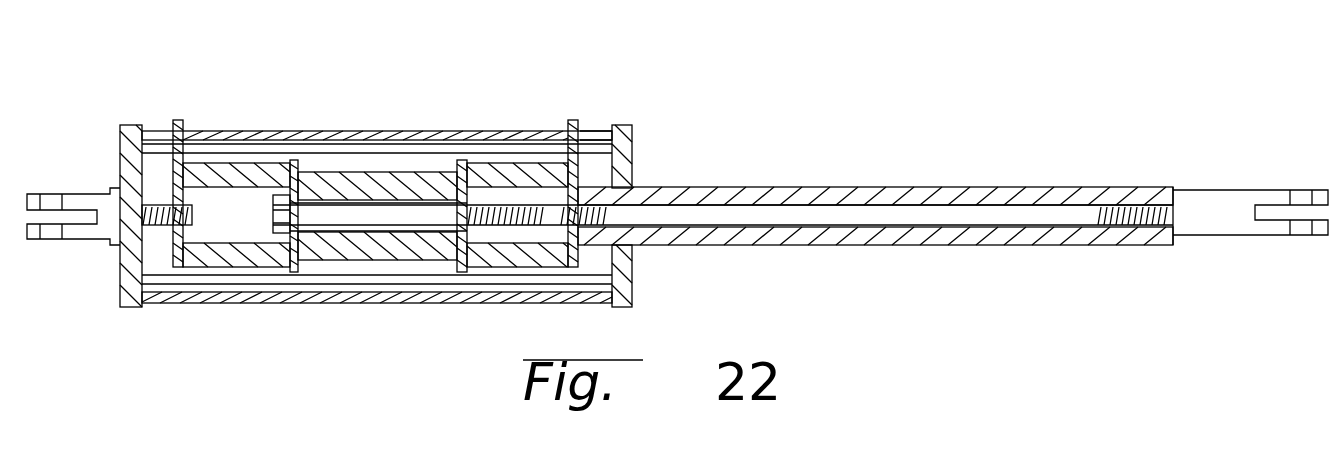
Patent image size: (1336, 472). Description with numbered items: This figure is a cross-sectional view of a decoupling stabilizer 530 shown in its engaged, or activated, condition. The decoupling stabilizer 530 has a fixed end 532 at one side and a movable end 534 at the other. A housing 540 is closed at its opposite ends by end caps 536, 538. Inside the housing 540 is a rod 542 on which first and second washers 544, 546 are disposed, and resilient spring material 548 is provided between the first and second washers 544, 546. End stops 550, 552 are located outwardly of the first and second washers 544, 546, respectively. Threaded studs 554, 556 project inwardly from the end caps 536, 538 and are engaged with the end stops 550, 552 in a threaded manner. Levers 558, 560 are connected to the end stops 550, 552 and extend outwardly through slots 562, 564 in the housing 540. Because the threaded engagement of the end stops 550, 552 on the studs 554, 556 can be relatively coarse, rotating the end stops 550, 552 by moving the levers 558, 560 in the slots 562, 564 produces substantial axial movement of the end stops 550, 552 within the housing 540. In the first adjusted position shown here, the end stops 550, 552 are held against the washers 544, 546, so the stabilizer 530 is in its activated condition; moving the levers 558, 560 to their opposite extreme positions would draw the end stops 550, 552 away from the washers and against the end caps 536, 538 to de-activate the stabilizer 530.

The decoupling stabilizer 530 is at (236, 328).
The fixed end 532 is at (52, 192).
The movable end 534 is at (1225, 200).
The end cap 536 is at (125, 293).
The end cap 538 is at (633, 288).
The housing 540 is at (290, 297).
The rod 542 is at (378, 208).
The first washer 544 is at (292, 158).
The second washer 546 is at (457, 158).
The resilient spring material 548 is at (381, 243).
The end stop 550 is at (205, 258).
The end stop 552 is at (518, 262).
The threaded stud 554 is at (158, 230).
The threaded stud 556 is at (632, 173).
The lever 558 is at (178, 120).
The lever 560 is at (573, 118).
The slot 562 is at (155, 133).
The slot 564 is at (596, 132).